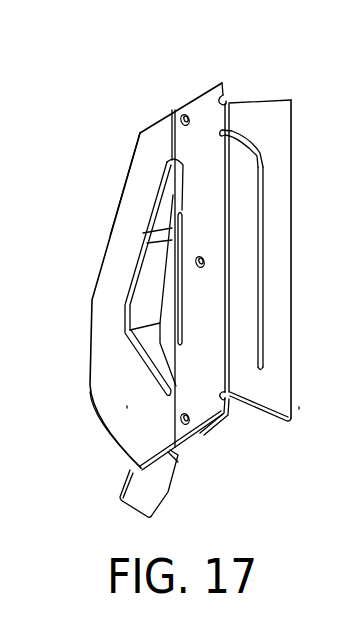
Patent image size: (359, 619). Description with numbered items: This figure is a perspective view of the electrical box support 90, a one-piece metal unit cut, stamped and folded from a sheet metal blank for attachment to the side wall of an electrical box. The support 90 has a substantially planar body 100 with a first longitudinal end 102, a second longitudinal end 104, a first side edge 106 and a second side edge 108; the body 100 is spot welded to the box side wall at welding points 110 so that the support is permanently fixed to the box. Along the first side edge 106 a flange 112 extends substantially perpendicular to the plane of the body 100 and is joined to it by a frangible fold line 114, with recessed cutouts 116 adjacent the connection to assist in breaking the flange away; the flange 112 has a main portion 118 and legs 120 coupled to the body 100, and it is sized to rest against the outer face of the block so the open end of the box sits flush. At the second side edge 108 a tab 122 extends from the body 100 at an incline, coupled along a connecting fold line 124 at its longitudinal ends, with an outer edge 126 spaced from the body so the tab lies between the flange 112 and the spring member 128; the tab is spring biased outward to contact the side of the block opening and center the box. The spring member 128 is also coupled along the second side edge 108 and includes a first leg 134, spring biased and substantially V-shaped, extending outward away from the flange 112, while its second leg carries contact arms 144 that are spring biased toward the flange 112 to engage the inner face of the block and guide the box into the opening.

The electrical box support 90 is at (263, 87).
The body 100 is at (210, 287).
The first longitudinal end 102 is at (206, 100).
The second longitudinal end 104 is at (188, 440).
The first side edge 106 is at (228, 237).
The second side edge 108 is at (177, 378).
The welding points 110 is at (182, 114).
The flange 112 is at (299, 407).
The fold line 114 is at (245, 120).
The recessed cutouts 116 is at (222, 96).
The main portion 118 is at (281, 388).
The legs 120 is at (250, 130).
The tab 122 is at (172, 268).
The connecting fold line 124 is at (185, 192).
The outer edge 126 is at (167, 283).
The spring member 128 is at (140, 133).
The first leg 134 is at (127, 406).
The contact arms 144 is at (119, 494).